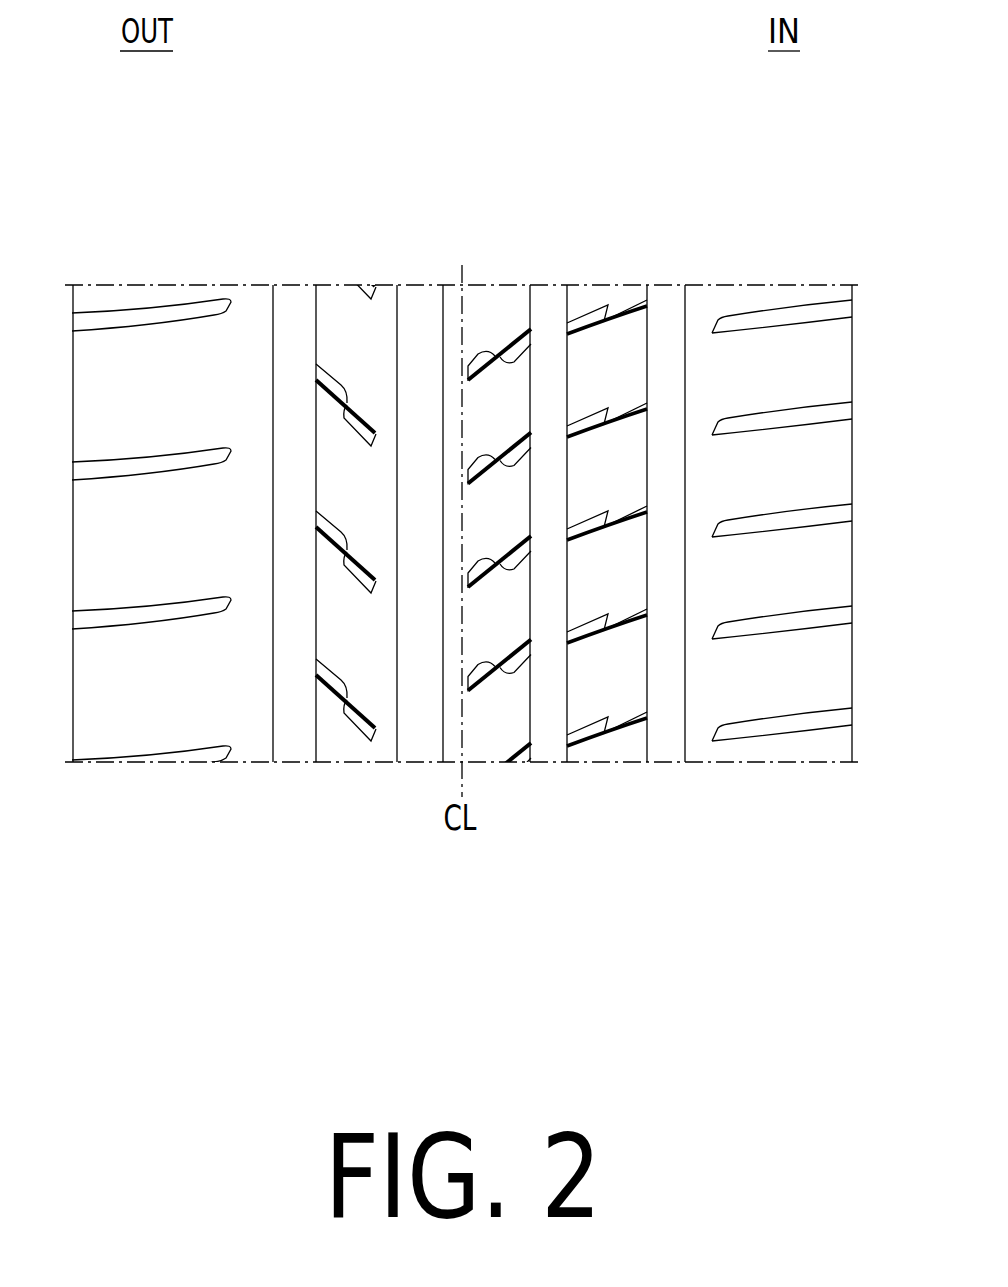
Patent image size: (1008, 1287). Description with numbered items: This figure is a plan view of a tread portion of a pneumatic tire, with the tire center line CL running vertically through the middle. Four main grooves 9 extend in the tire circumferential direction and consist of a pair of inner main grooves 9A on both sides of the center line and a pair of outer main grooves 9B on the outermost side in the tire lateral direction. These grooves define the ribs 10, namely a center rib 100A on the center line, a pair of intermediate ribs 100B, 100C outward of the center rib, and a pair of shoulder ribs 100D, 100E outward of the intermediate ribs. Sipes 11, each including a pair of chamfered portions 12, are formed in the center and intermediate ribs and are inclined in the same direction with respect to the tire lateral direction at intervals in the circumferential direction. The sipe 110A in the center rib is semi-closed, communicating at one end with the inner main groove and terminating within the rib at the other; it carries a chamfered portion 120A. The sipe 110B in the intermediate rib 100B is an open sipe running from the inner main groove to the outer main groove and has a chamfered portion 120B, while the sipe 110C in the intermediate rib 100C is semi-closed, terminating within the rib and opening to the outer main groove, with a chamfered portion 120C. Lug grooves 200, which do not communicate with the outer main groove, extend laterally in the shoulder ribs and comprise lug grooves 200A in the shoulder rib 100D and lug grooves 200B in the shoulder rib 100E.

The lug grooves 200B is at (150, 318).
The lug grooves 200A is at (788, 313).
The lug grooves 200 is at (462, 456).
The sipe 110C is at (356, 395).
The sipe 110A is at (514, 422).
The sipe 110B is at (626, 398).
The sipes 11 is at (356, 395).
The chamfered portion 120C is at (333, 395).
The chamfered portion 120A is at (507, 422).
The chamfered portion 120B is at (626, 398).
The chamfered portions 12 is at (333, 395).
The inner main grooves 9A is at (423, 747).
The outer main grooves 9B is at (293, 747).
The main grooves 9 is at (479, 596).
The center rib 100A is at (502, 516).
The intermediate rib 100B is at (626, 516).
The intermediate rib 100C is at (333, 516).
The shoulder rib 100D is at (790, 747).
The shoulder rib 100E is at (142, 728).
The ribs 10 is at (462, 516).